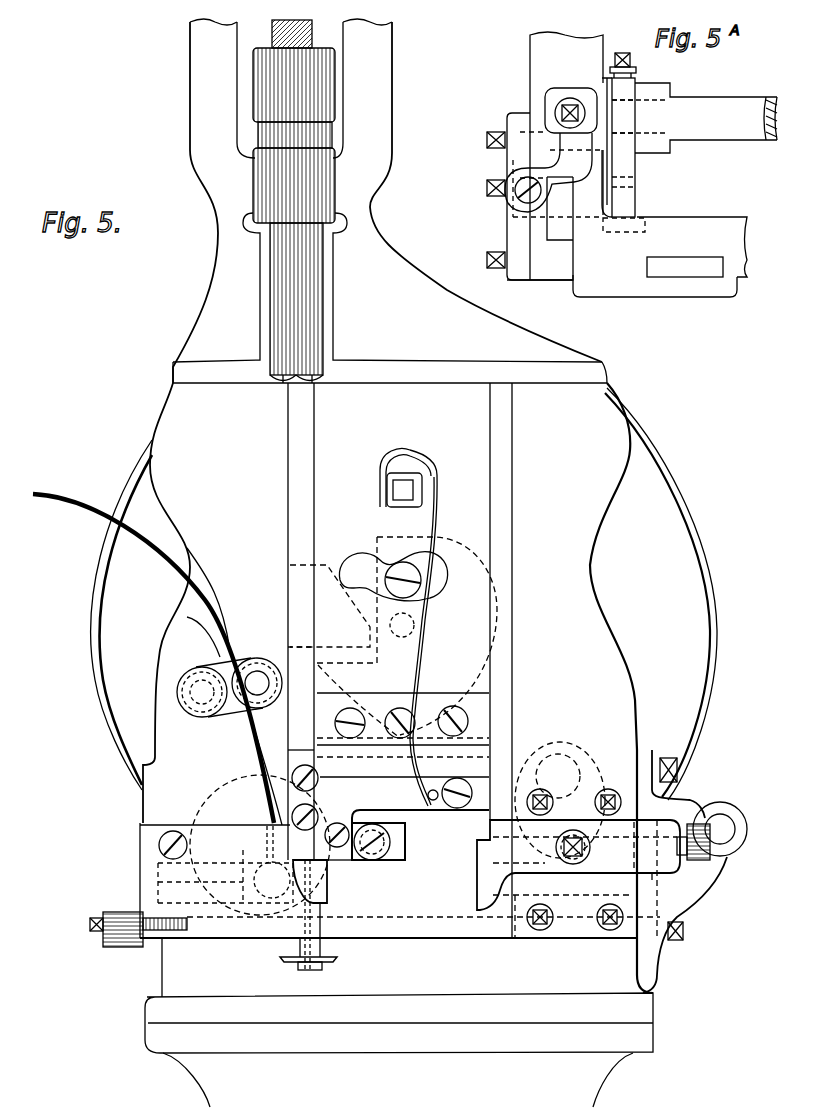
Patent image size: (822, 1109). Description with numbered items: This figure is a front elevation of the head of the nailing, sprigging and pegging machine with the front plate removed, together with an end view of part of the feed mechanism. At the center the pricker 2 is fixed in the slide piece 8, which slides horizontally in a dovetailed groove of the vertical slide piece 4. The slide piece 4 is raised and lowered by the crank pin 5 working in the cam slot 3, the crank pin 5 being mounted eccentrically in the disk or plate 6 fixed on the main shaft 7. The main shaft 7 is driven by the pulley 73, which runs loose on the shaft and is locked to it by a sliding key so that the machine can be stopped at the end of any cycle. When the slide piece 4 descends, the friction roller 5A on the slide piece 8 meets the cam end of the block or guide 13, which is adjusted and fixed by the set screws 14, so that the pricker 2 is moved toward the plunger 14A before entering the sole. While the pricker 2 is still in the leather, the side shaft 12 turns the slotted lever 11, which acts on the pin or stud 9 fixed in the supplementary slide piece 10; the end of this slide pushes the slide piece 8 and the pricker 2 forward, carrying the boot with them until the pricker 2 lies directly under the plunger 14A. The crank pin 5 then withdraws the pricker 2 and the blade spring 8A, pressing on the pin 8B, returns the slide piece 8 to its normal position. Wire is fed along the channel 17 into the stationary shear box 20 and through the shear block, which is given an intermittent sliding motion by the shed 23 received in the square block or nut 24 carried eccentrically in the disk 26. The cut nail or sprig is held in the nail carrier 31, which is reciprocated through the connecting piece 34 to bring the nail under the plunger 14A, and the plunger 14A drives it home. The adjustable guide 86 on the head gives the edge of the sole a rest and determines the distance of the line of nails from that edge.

In FIG. 5, the pricker 2 is at (330, 866).
In FIG. 5, the cam slot 3 is at (434, 640).
In FIG. 5, the slide piece 4 is at (387, 478).
In FIG. 5, the crank pin 5 is at (403, 580).
In FIG. 5, the friction roller 5A is at (462, 805).
In FIG. 5, the disk or plate 6 is at (366, 553).
In FIG. 5, the main shaft 7 is at (402, 625).
In FIG. 5, the slide piece 8 is at (390, 776).
In FIG. 5, the blade spring 8A is at (424, 645).
In FIG. 5, the pin 8B is at (433, 801).
In FIG. 5, the pin or stud 9 is at (590, 868).
In FIG. 5A, the pin or stud 9 is at (610, 200).
In FIG. 5, the supplementary slide piece 10 is at (503, 902).
In FIG. 5A, the supplementary slide piece 10 is at (564, 238).
In FIG. 5, the slotted lever 11 is at (612, 766).
In FIG. 5A, the slotted lever 11 is at (628, 165).
In FIG. 5, the side shaft 12 is at (575, 760).
In FIG. 5A, the side shaft 12 is at (694, 118).
In FIG. 5, the block or guide 13 is at (578, 865).
In FIG. 5A, the block or guide 13 is at (540, 262).
In FIG. 5, the set screws 14 is at (665, 756).
In FIG. 5A, the set screws 14 is at (558, 108).
In FIG. 5, the plunger 14A is at (326, 886).
In FIG. 5, the channel 17 is at (157, 659).
In FIG. 5, the shear box 20 is at (215, 798).
In FIG. 5, the shed 23 is at (272, 862).
In FIG. 5, the square block or nut 24 is at (245, 888).
In FIG. 5, the disk 26 is at (195, 803).
In FIG. 5, the nail carrier 31 is at (200, 941).
In FIG. 5, the connecting piece 34 is at (118, 912).
In FIG. 5, the pulley 73 is at (404, 594).
In FIG. 5, the adjustable guide 86 is at (336, 961).